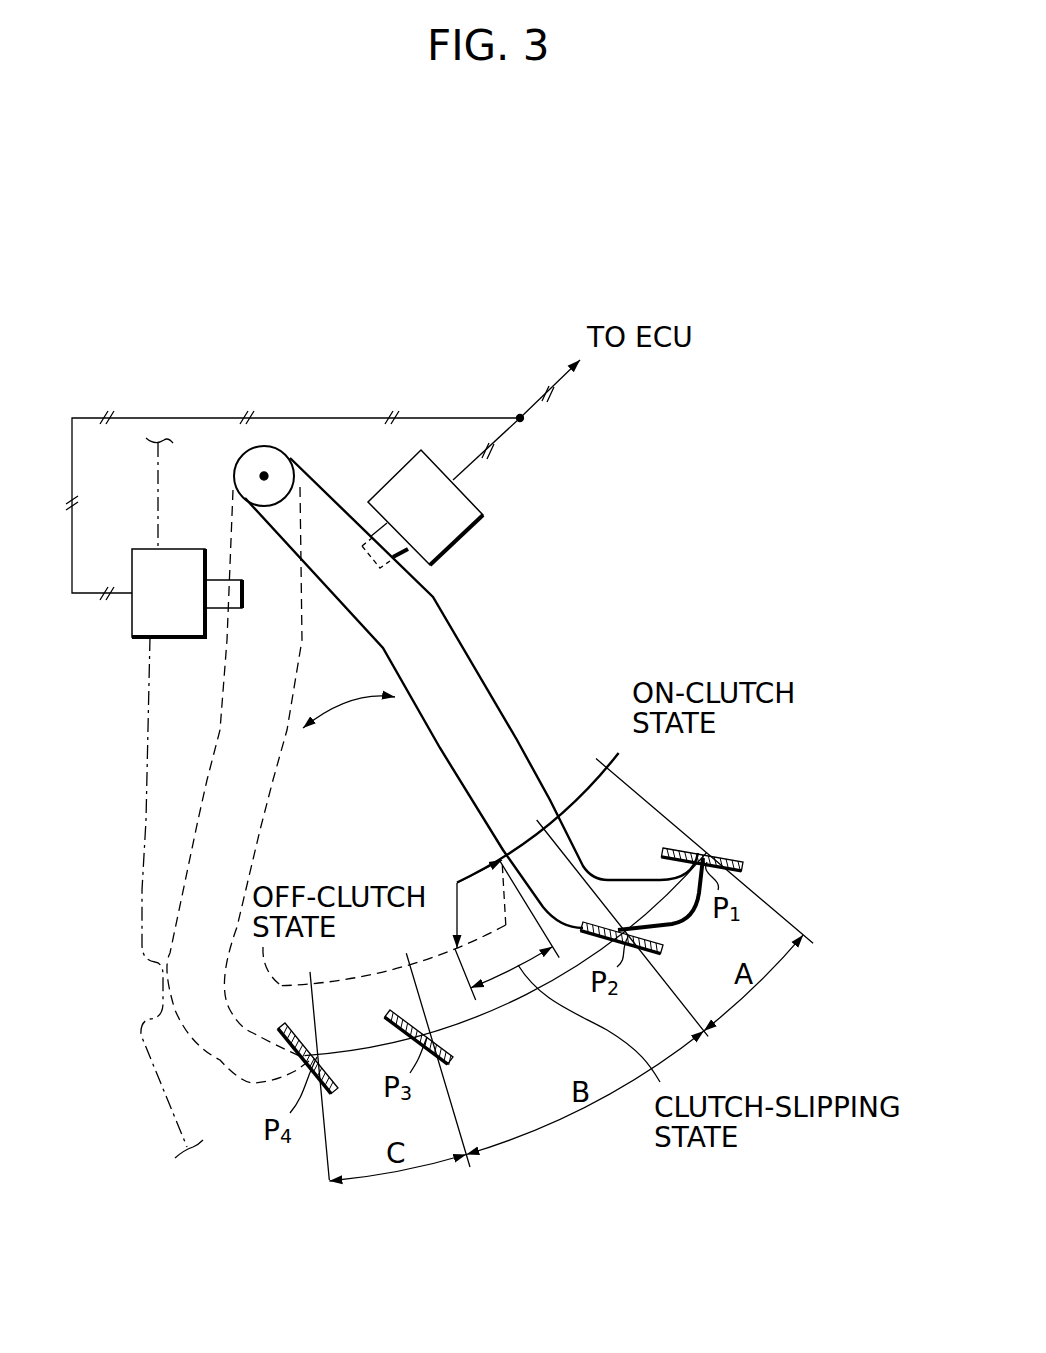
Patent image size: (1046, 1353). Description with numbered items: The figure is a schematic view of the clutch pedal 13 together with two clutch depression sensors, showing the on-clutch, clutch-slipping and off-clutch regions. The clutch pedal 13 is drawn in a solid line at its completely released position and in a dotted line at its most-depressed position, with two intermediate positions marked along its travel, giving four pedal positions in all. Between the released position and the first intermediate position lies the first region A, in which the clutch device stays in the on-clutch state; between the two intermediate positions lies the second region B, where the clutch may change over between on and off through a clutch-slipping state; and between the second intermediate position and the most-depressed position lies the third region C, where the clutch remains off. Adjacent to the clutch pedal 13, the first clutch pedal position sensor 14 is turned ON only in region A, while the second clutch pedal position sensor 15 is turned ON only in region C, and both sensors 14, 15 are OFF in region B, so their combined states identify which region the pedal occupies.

The clutch pedal 13 is at (725, 850).
The first clutch pedal position sensor 14 is at (458, 540).
The second clutch pedal position sensor 15 is at (132, 637).